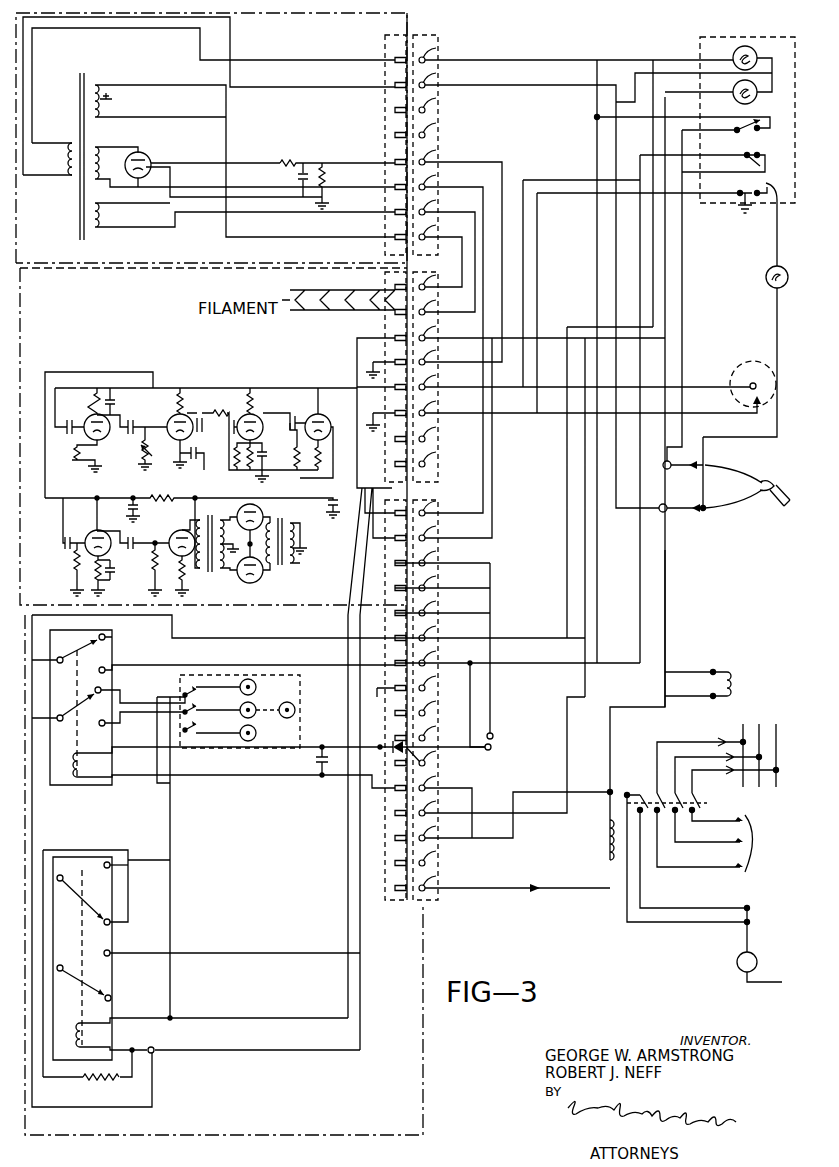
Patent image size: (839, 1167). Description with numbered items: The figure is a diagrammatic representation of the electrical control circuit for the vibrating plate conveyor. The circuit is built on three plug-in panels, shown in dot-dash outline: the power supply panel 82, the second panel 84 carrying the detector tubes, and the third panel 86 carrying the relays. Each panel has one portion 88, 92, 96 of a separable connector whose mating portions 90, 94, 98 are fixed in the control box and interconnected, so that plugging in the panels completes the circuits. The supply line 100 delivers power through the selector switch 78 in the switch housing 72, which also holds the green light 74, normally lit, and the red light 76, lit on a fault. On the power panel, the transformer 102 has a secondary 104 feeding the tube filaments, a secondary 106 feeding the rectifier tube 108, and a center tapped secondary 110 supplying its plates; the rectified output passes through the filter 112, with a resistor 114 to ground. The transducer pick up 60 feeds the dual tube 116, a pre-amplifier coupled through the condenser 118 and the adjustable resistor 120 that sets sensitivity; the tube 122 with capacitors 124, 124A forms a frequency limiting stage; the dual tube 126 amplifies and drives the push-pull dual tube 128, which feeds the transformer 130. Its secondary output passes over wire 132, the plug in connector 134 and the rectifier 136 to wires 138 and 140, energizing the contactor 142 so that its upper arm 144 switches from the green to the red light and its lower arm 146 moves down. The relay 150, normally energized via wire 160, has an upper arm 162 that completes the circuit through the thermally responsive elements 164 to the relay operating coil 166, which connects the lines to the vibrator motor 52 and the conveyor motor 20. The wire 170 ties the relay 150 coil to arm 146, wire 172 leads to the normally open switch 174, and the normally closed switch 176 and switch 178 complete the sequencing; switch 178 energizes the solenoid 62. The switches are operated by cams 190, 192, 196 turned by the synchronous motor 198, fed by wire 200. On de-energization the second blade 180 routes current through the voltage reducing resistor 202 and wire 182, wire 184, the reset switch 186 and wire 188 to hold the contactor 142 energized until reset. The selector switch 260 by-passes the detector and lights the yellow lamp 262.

The conveyor motor 20 is at (740, 956).
The vibrator motor 52 is at (706, 798).
The transducer pick up 60 is at (750, 358).
The solenoid 62 is at (738, 692).
The switch housing 72 is at (774, 40).
The green light 74 is at (745, 46).
The red light 76 is at (753, 102).
The selector switch 78 is at (754, 135).
The panel 82 is at (407, 23).
The second panel 84 is at (200, 268).
The third panel 86 is at (423, 940).
The separable connector portion 88 is at (383, 41).
The separable connector portion 90 is at (443, 50).
The separable connector portion 92 is at (381, 320).
The separable connector portion 94 is at (442, 334).
The separable connector portion 96 is at (395, 912).
The separable connector portion 98 is at (439, 898).
The supply line 100 is at (764, 503).
The transformer 102 is at (78, 185).
The secondary 104 is at (98, 85).
The secondary 106 is at (100, 230).
The rectifier tube 108 is at (150, 162).
The center tapped secondary 110 is at (104, 150).
The filter 112 is at (283, 160).
The resistor 114 is at (324, 166).
The dual tube 116 is at (80, 425).
The condenser 118 is at (130, 421).
The adjustable resistor 120 is at (138, 447).
The tube 122 is at (262, 415).
The capacitor 124 is at (247, 413).
The capacitor 124A is at (300, 422).
The dual tube 126 is at (80, 556).
The dual tube 128 is at (245, 583).
The transformer 130 is at (283, 570).
The wire 132 is at (491, 683).
The plug in connector 134 is at (494, 746).
The rectifier 136 is at (436, 762).
The wire 138 is at (377, 691).
The wire 140 is at (331, 749).
The contactor 142 is at (62, 781).
The upper arm 144 is at (105, 643).
The lower arm 146 is at (108, 710).
The relay 150 is at (95, 857).
The wire 160 is at (360, 345).
The upper arm 162 is at (112, 896).
The thermally responsive elements 164 is at (666, 621).
The relay operating coil 166 is at (600, 840).
The wire 170 is at (152, 1108).
The wire 172 is at (120, 700).
The normally open switch 174 is at (188, 700).
The normally closed switch 176 is at (210, 752).
The switch 178 is at (192, 688).
The second blade 180 is at (105, 983).
The wire 182 is at (238, 946).
The wire 184 is at (538, 298).
The reset switch 186 is at (745, 214).
The wire 188 is at (549, 180).
The cam 190 is at (297, 678).
The cam 192 is at (252, 750).
The cam 196 is at (256, 680).
The synchronous motor 198 is at (290, 775).
The wire 200 is at (172, 668).
The voltage reducing resistor 202 is at (128, 1080).
The selector switch 260 is at (772, 210).
The yellow lamp 262 is at (765, 285).